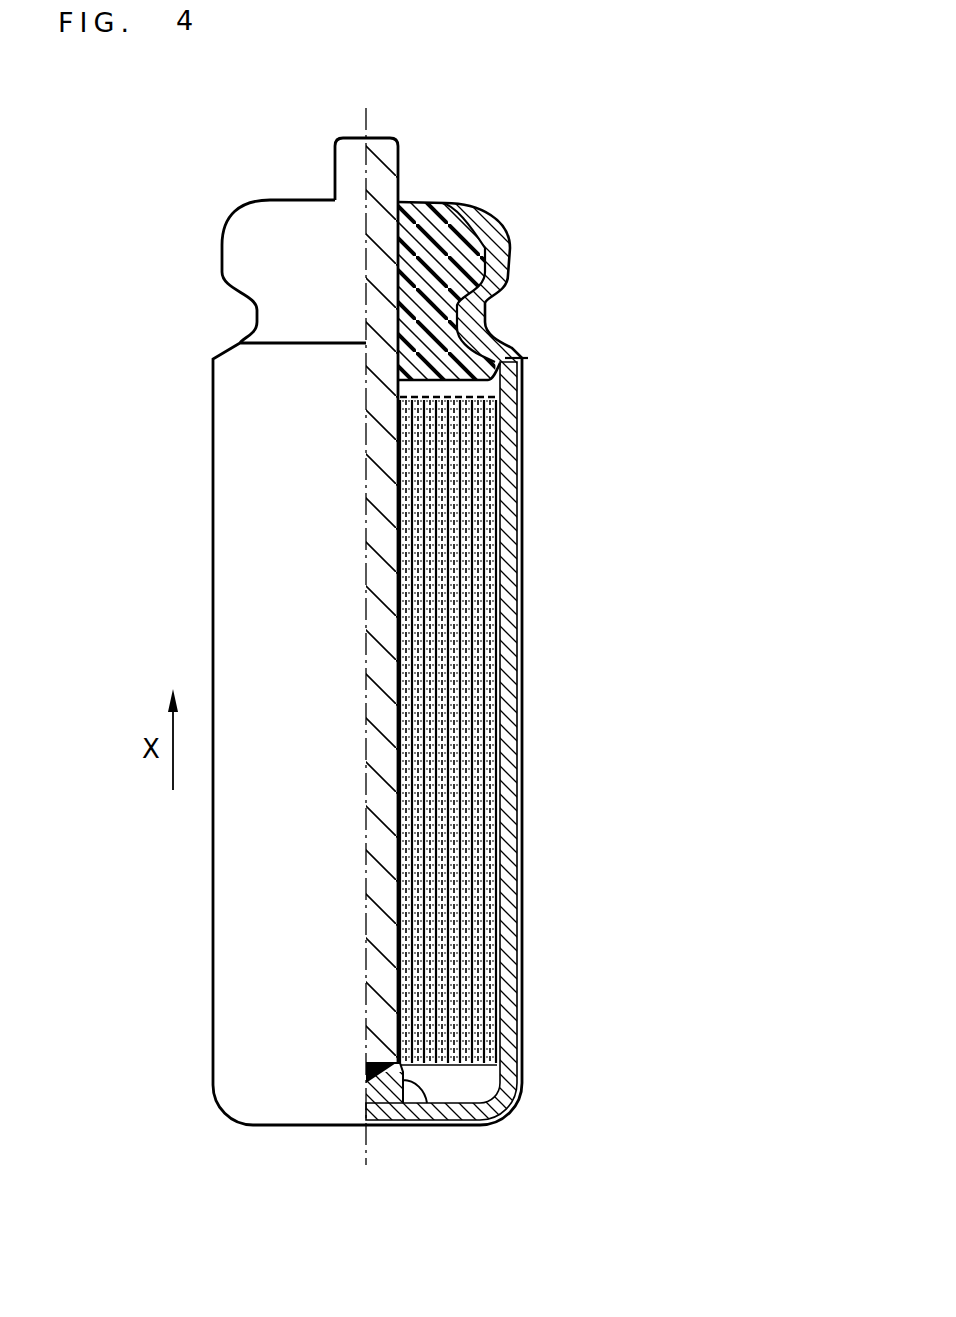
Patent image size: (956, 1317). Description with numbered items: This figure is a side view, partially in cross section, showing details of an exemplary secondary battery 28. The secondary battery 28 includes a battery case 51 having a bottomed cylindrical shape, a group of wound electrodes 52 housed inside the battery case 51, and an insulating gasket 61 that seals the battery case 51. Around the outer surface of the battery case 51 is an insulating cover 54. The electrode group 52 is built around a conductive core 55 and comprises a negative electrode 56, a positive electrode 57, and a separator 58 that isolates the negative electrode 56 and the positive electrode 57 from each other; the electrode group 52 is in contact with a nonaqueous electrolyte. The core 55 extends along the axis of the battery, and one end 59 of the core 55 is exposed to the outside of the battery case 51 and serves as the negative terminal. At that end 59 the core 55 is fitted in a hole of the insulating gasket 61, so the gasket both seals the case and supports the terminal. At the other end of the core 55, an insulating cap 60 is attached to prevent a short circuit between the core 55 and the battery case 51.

The secondary battery 28 is at (596, 167).
The battery case 51 is at (500, 1020).
The group of wound electrodes 52 is at (613, 300).
The insulating cover 54 is at (521, 950).
The conductive core 55 is at (382, 349).
The negative electrode 56 is at (490, 380).
The positive electrode 57 is at (500, 480).
The separator 58 is at (500, 434).
The one end 59 is at (386, 131).
The insulating cap 60 is at (415, 1083).
The insulating gasket 61 is at (417, 220).